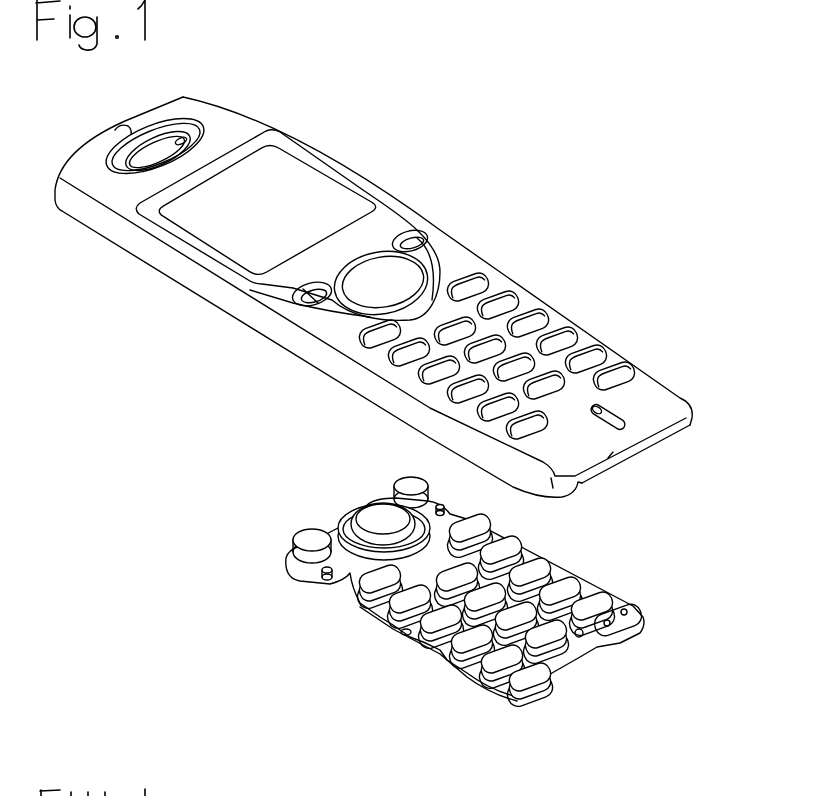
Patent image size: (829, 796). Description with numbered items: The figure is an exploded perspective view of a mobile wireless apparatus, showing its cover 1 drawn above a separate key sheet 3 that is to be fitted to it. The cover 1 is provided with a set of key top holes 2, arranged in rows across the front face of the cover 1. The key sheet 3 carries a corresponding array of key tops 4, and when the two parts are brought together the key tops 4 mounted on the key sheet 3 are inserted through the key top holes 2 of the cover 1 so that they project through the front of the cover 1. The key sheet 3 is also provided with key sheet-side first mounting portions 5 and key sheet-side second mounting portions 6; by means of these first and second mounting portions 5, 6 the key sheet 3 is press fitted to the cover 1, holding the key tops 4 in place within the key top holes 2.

The cover 1 is at (458, 242).
The key top holes 2 is at (530, 330).
The key sheet 3 is at (440, 645).
The key tops 4 is at (530, 572).
The key sheet-side first mounting portions 5 is at (344, 550).
The key sheet-side second mounting portions 6 is at (549, 658).